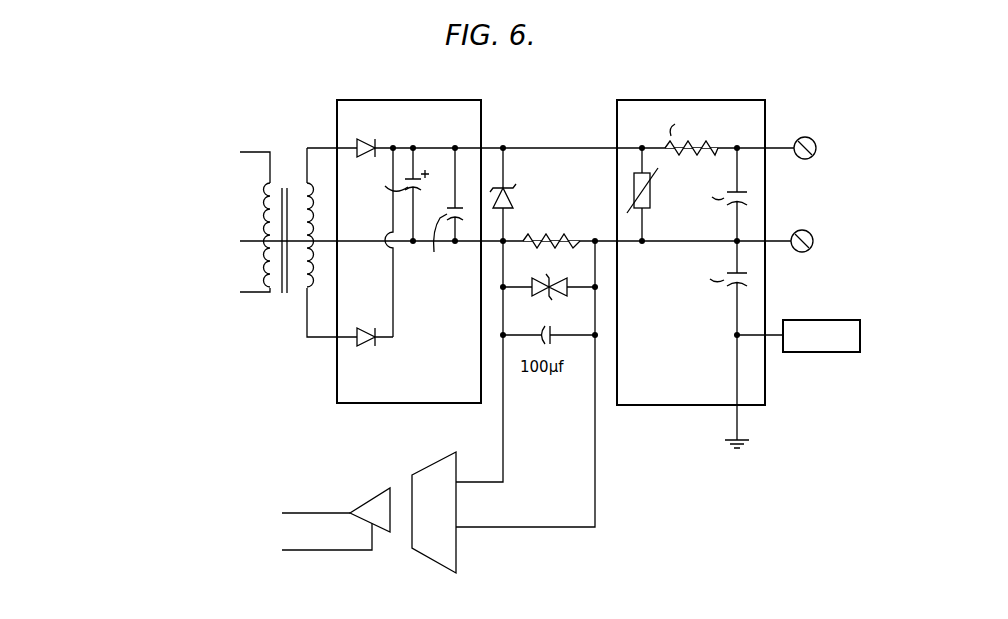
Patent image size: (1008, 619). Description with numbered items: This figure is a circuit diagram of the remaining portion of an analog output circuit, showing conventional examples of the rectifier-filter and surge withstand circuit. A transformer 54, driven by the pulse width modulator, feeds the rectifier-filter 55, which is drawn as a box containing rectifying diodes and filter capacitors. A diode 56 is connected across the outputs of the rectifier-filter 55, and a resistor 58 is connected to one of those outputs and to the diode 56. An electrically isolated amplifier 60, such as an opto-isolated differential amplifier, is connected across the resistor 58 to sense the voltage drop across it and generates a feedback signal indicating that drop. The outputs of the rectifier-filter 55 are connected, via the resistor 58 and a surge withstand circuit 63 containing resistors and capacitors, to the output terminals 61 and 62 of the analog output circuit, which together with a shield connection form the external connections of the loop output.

The transformer 54 is at (292, 183).
The rectifier-filter 55 is at (482, 112).
The diode 56 is at (506, 198).
The resistor 58 is at (524, 248).
The electrically isolated amplifier 60 is at (397, 490).
The output terminal 61 is at (797, 138).
The output terminal 62 is at (808, 233).
The surge withstand circuit 63 is at (648, 99).